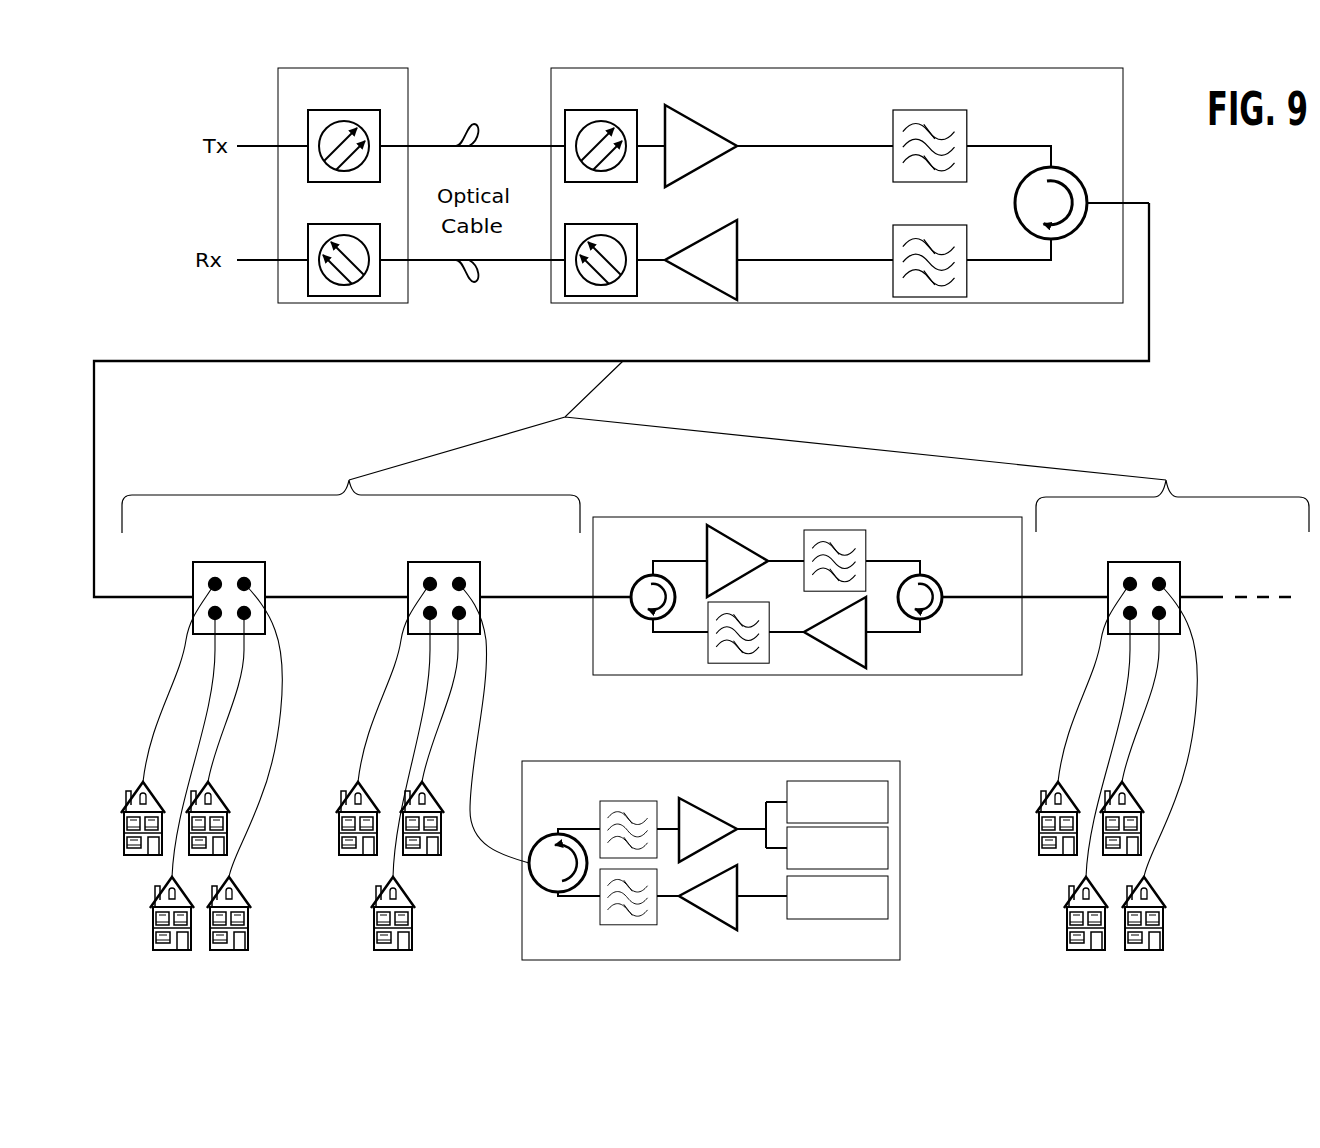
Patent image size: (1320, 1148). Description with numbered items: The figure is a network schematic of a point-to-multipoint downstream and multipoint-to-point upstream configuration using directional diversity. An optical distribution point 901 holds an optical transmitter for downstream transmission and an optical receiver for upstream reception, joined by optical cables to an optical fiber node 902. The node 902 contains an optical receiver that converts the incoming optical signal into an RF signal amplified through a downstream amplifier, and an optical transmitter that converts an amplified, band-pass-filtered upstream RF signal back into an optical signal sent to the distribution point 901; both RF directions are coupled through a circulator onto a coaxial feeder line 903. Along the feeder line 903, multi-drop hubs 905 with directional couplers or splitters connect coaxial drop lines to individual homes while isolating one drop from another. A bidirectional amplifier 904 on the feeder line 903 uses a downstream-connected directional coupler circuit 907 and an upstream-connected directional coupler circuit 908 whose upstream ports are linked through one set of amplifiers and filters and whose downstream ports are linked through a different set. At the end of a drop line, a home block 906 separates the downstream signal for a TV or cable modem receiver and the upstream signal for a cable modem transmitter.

The optical distribution point 901 is at (343, 170).
The optical fiber node 902 is at (850, 170).
The coaxial feeder line 903 is at (565, 417).
The bidirectional amplifier 904 is at (807, 583).
The multi-drop hub 905 is at (686, 585).
The home configuration block 906 is at (711, 847).
The downstream-connected directional coupler circuit 907 is at (940, 603).
The upstream-connected directional coupler circuit 908 is at (642, 585).